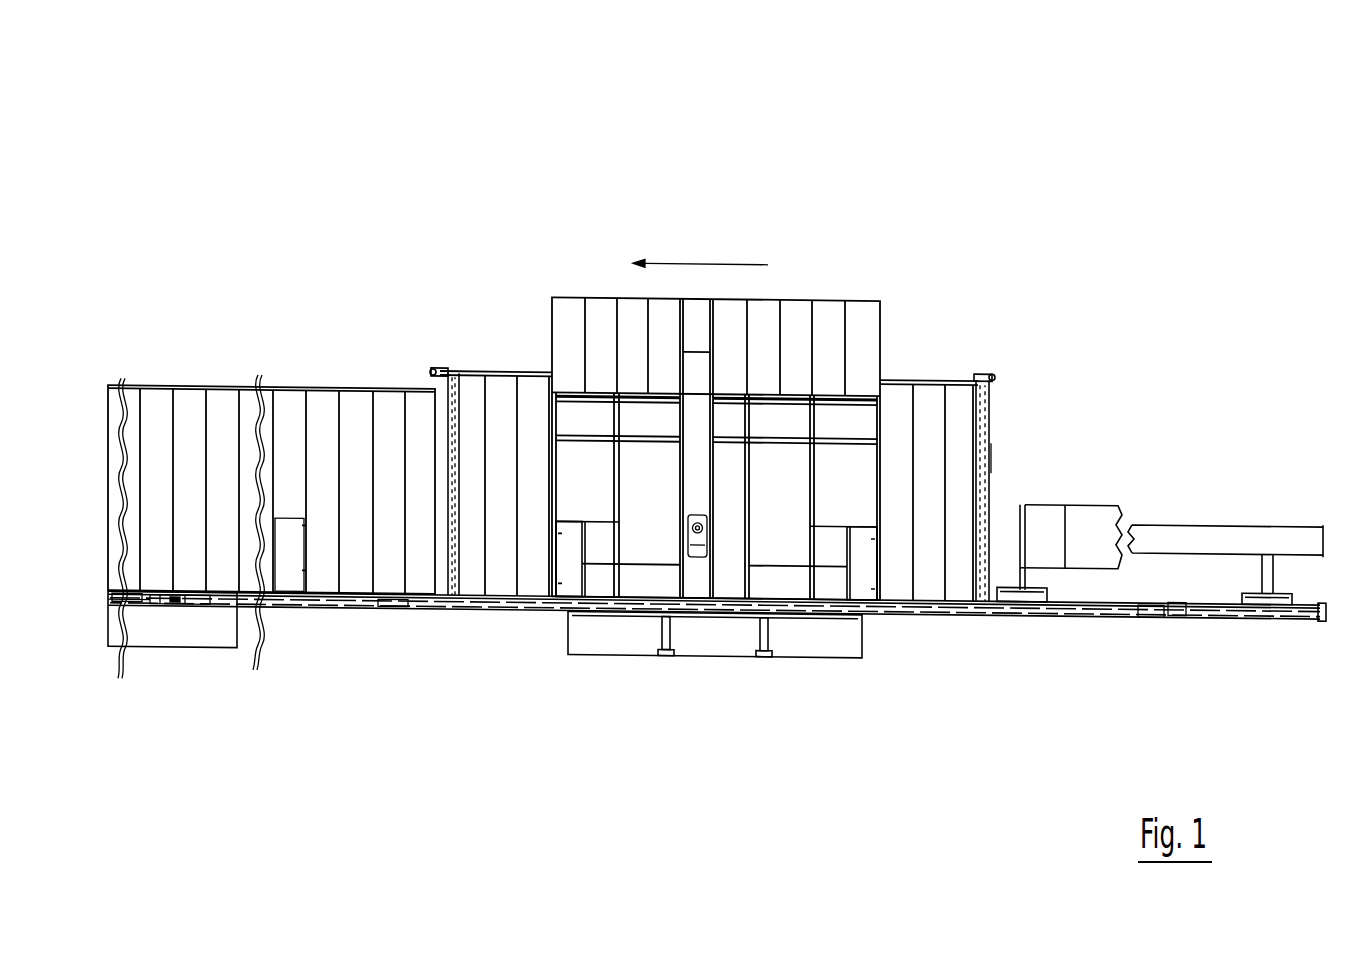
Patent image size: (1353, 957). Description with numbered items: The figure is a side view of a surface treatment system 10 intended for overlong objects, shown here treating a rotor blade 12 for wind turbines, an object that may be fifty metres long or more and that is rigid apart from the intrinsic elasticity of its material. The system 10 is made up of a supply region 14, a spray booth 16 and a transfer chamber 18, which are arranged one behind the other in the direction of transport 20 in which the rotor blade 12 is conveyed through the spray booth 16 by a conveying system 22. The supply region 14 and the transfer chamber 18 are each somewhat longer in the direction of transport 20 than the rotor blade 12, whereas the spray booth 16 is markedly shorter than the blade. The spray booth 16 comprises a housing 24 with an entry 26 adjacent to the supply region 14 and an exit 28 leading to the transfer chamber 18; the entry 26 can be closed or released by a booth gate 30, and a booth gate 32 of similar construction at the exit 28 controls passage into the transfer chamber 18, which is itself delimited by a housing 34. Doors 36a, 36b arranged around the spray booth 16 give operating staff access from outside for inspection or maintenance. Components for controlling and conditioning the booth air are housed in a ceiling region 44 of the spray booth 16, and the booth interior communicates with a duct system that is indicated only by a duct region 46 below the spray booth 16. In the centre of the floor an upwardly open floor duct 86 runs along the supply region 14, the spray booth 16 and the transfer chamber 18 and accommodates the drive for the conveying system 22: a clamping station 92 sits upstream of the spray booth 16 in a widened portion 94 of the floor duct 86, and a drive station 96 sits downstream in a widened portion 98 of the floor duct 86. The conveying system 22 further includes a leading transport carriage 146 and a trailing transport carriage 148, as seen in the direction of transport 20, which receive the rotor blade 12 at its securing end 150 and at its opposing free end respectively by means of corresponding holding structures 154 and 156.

The surface treatment system 10 is at (1046, 157).
The rotor blade 12 is at (1170, 540).
The supply region 14 is at (1158, 414).
The spray booth 16 is at (741, 473).
The transfer chamber 18 is at (271, 432).
The direction of transport 20 is at (692, 264).
The conveying system 22 is at (1031, 629).
The housing 24 is at (927, 420).
The entry 26 is at (965, 419).
The exit 28 is at (429, 420).
The booth gate 30 is at (1005, 454).
The booth gate 32 is at (392, 605).
The housing 34 is at (165, 415).
The door 36a is at (572, 565).
The door 36b is at (863, 578).
The ceiling region 44 is at (528, 326).
The duct region 46 is at (803, 640).
The floor duct 86 is at (955, 609).
The clamping station 92 is at (1151, 632).
The widened portion 94 is at (1178, 613).
The drive station 96 is at (199, 620).
The widened portion 98 is at (143, 605).
The leading transport carriage 146 is at (999, 573).
The trailing transport carriage 148 is at (1280, 578).
The securing end 150 is at (1050, 498).
The holding structure 154 is at (1039, 578).
The holding structure 156 is at (1250, 578).